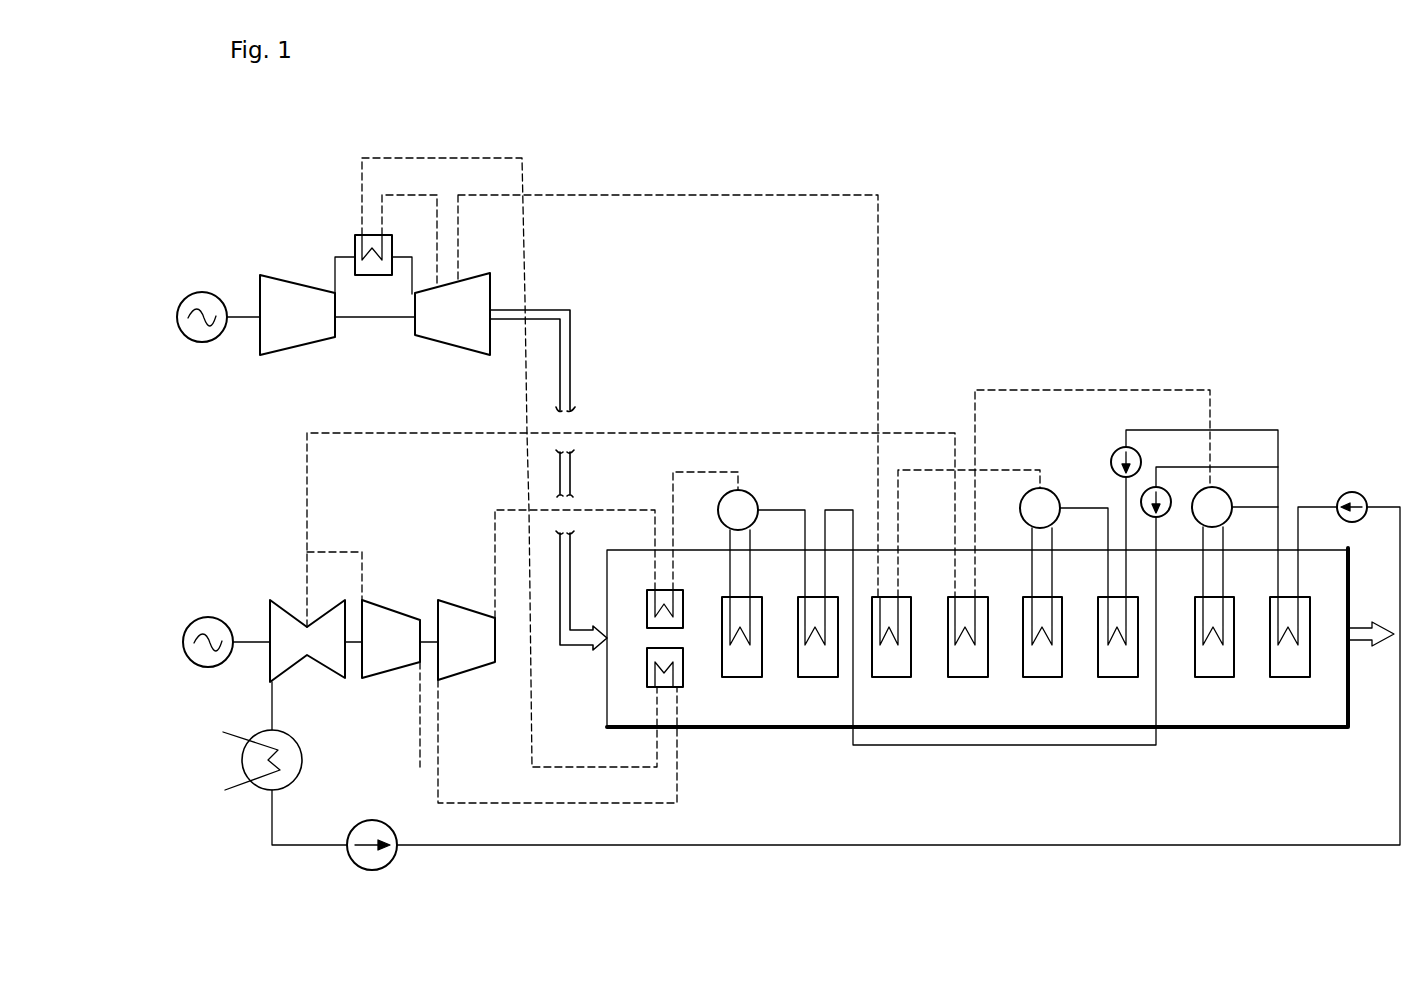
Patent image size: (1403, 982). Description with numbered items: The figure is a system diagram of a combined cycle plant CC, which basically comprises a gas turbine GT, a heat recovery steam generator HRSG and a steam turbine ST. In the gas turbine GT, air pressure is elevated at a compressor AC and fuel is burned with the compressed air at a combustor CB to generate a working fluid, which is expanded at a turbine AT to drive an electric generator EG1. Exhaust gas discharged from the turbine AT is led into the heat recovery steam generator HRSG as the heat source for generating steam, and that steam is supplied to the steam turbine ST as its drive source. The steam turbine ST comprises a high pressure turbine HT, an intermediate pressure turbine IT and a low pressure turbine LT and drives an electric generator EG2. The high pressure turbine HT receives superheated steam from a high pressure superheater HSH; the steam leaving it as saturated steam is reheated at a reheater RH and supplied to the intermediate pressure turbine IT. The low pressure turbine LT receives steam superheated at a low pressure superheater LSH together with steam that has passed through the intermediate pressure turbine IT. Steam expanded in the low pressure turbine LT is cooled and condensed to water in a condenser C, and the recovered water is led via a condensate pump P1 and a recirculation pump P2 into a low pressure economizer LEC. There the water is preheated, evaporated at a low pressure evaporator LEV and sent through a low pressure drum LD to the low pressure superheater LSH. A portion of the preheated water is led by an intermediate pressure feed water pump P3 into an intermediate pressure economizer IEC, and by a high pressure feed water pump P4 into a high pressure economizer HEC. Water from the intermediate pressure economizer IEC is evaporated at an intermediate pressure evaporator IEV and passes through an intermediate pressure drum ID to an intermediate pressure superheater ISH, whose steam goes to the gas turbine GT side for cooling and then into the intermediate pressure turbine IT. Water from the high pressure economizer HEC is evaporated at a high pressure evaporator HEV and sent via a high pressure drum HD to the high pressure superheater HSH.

The combined cycle plant CC is at (1092, 243).
The gas turbine GT is at (292, 258).
The electric generator EG1 is at (202, 292).
The compressor AC is at (280, 338).
The combustor CB is at (370, 276).
The turbine AT is at (447, 330).
The steam turbine ST is at (397, 568).
The electric generator EG2 is at (207, 617).
The low pressure turbine LT is at (322, 658).
The intermediate pressure turbine IT is at (390, 658).
The high pressure turbine HT is at (467, 657).
The condenser C is at (264, 790).
The condensate pump P1 is at (391, 862).
The heat recovery steam generator HRSG is at (782, 742).
The high pressure superheater HSH is at (647, 612).
The reheater RH is at (641, 670).
The high pressure drum HD is at (757, 502).
The high pressure evaporator HEV is at (738, 682).
The high pressure economizer HEC is at (813, 682).
The intermediate pressure superheater ISH is at (889, 682).
The low pressure superheater LSH is at (967, 682).
The intermediate pressure drum ID is at (1053, 489).
The intermediate pressure evaporator IEV is at (1044, 682).
The intermediate pressure economizer IEC is at (1117, 682).
The intermediate pressure feed water pump P3 is at (1125, 447).
The high pressure feed water pump P4 is at (1161, 488).
The low pressure drum LD is at (1230, 495).
The low pressure evaporator LEV is at (1211, 682).
The low pressure economizer LEC is at (1291, 682).
The recirculation pump P2 is at (1352, 492).